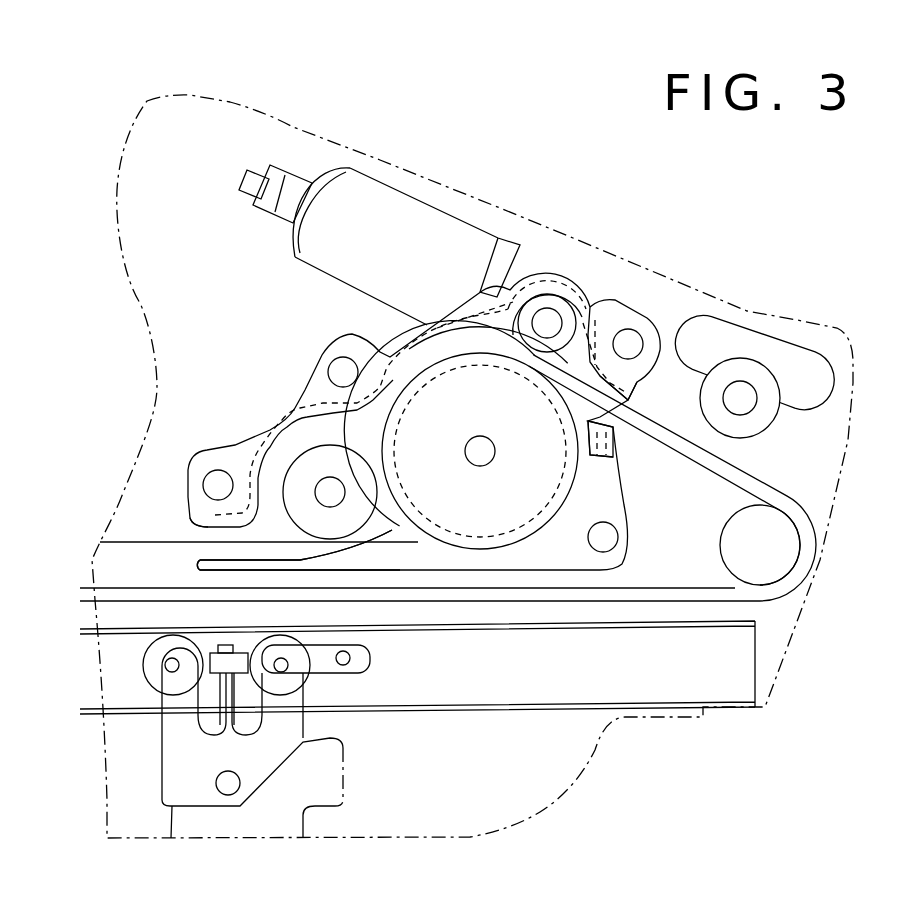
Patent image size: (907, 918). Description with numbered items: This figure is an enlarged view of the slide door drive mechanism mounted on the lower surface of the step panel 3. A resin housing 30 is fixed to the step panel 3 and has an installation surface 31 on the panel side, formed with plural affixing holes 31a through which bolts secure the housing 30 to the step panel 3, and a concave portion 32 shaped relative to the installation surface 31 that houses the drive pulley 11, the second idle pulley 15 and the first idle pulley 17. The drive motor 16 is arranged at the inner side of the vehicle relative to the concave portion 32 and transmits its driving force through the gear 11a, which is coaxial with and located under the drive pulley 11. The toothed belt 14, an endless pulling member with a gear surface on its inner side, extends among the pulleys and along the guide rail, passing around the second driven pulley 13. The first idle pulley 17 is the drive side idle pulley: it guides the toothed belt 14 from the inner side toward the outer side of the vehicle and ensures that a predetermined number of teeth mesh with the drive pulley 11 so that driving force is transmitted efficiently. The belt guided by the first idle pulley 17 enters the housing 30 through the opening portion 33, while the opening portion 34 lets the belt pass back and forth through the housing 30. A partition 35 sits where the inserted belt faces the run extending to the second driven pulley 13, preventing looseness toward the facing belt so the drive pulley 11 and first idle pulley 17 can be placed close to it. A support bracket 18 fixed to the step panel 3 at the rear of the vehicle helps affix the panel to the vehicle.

The step panel 3 is at (503, 210).
The drive pulley 11 is at (480, 550).
The gear 11a is at (575, 395).
The second driven pulley 13 is at (800, 535).
The toothed belt 14 is at (113, 542).
The second idle pulley 15 is at (582, 287).
The drive motor 16 is at (358, 192).
The first idle pulley 17 is at (293, 447).
The support bracket 18 is at (815, 352).
The housing 30 is at (573, 292).
The installation surface 31 is at (323, 363).
The affixing holes 31a is at (342, 360).
The concave portion 32 is at (590, 456).
The opening portion 33 is at (208, 528).
The opening portion 34 is at (630, 400).
The partition 35 is at (192, 563).